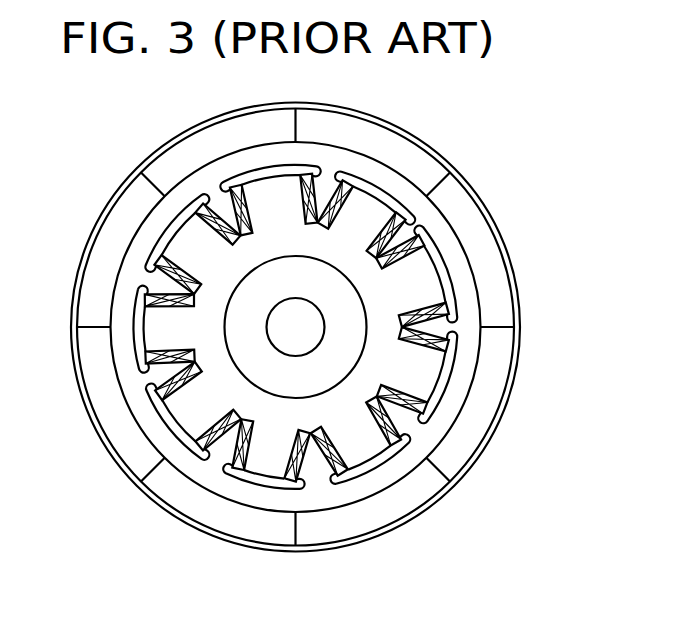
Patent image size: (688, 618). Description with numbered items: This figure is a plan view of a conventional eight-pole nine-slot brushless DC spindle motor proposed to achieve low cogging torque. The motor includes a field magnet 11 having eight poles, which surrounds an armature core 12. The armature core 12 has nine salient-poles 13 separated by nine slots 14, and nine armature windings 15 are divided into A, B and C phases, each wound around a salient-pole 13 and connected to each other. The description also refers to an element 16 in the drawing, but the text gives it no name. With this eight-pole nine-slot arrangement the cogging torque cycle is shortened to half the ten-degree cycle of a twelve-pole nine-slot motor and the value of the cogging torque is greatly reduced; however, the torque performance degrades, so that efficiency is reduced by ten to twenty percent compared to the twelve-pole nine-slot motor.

The field magnet 11 is at (462, 215).
The armature core 12 is at (470, 357).
The salient-pole 13 is at (442, 375).
The slot 14 is at (460, 450).
The armature winding 15 is at (383, 440).
The yoke 16 is at (427, 152).